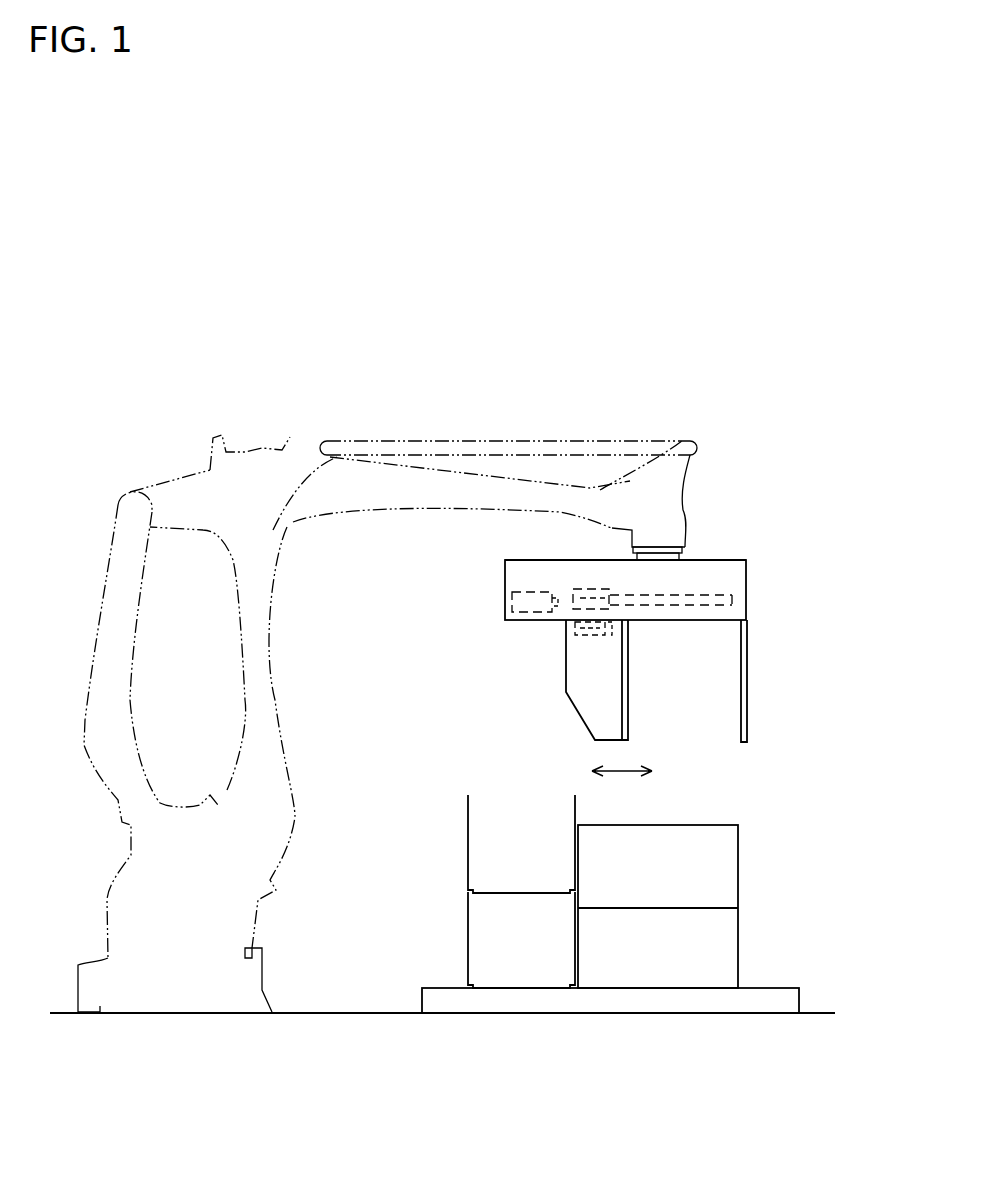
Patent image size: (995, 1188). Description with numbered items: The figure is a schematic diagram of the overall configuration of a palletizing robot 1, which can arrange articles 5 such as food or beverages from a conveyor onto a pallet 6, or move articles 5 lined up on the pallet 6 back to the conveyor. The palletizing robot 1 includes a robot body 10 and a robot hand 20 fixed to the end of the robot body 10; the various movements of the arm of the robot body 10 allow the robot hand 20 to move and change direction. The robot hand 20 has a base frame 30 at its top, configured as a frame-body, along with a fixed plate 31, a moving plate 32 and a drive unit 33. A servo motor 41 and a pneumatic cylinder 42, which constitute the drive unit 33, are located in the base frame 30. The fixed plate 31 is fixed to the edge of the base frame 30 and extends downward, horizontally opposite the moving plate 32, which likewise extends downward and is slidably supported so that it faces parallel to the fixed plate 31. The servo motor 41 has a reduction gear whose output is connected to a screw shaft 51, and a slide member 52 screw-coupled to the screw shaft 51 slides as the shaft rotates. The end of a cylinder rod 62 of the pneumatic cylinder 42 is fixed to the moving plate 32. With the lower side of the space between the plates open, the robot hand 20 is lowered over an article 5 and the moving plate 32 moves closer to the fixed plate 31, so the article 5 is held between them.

The palletizing robot 1 is at (725, 192).
The robot body 10 is at (272, 385).
The robot hand 20 is at (835, 580).
The base frame 30 is at (730, 572).
The fixed plate 31 is at (747, 722).
The moving plate 32 is at (620, 727).
The drive unit 33 is at (576, 548).
The servo motor 41 is at (505, 600).
The pneumatic cylinder 42 is at (595, 648).
The screw shaft 51 is at (715, 588).
The slide member 52 is at (626, 620).
The cylinder rod 62 is at (630, 640).
The article 5 is at (468, 832).
The pallet 6 is at (790, 1000).